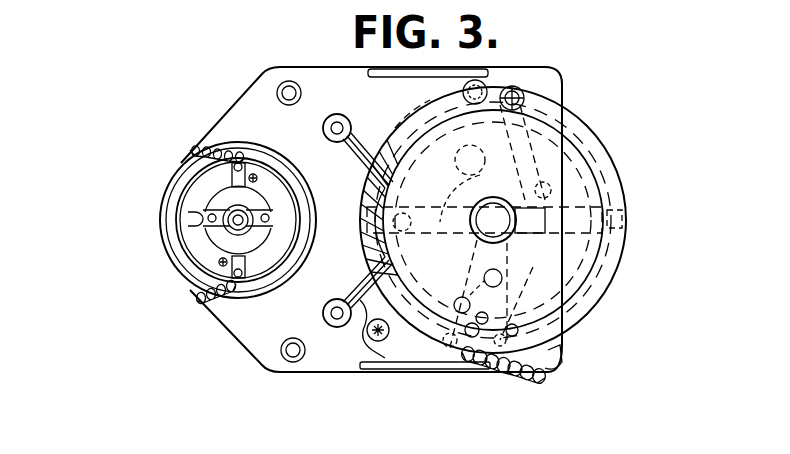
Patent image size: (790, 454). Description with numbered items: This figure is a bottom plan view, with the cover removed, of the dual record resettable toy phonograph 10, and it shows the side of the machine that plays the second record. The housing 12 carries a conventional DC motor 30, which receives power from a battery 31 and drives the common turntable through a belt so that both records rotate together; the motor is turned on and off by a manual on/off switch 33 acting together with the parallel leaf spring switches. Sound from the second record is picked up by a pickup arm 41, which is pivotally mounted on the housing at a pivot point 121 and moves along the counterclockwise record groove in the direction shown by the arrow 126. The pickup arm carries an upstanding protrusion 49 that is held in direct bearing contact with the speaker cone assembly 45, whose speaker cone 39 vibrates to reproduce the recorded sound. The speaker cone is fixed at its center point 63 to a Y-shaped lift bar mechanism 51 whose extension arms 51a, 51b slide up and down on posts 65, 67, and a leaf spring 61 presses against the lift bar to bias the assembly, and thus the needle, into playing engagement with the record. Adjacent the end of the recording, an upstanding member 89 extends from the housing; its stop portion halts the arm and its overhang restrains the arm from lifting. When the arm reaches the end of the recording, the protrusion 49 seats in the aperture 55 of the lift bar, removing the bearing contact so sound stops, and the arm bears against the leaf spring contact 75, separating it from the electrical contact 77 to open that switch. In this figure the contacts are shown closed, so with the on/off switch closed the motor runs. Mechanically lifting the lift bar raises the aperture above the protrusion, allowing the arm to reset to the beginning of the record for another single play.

The dual record resettable toy phonograph 10 is at (583, 86).
The housing 12 is at (565, 352).
The DC motor 30 is at (176, 240).
The battery 31 is at (190, 153).
The on/off switch 33 is at (197, 302).
The speaker cone 39 is at (608, 290).
The pickup arm 41 is at (596, 128).
The speaker cone assembly 45 is at (580, 315).
The upstanding protrusion 49 is at (605, 190).
The Y-shaped lift bar mechanism 51 is at (360, 178).
The extension arm 51a is at (344, 152).
The extension arm 51b is at (358, 278).
The aperture 55 is at (456, 170).
The leaf spring 61 is at (360, 368).
The center point of contact 63 is at (513, 216).
The post 65 is at (322, 126).
The post 67 is at (322, 316).
The leaf spring contact 75 is at (478, 286).
The electrical contact 77 is at (520, 290).
The upstanding member 89 is at (412, 112).
The pivot point 121 is at (565, 99).
The arrow 126 is at (377, 99).